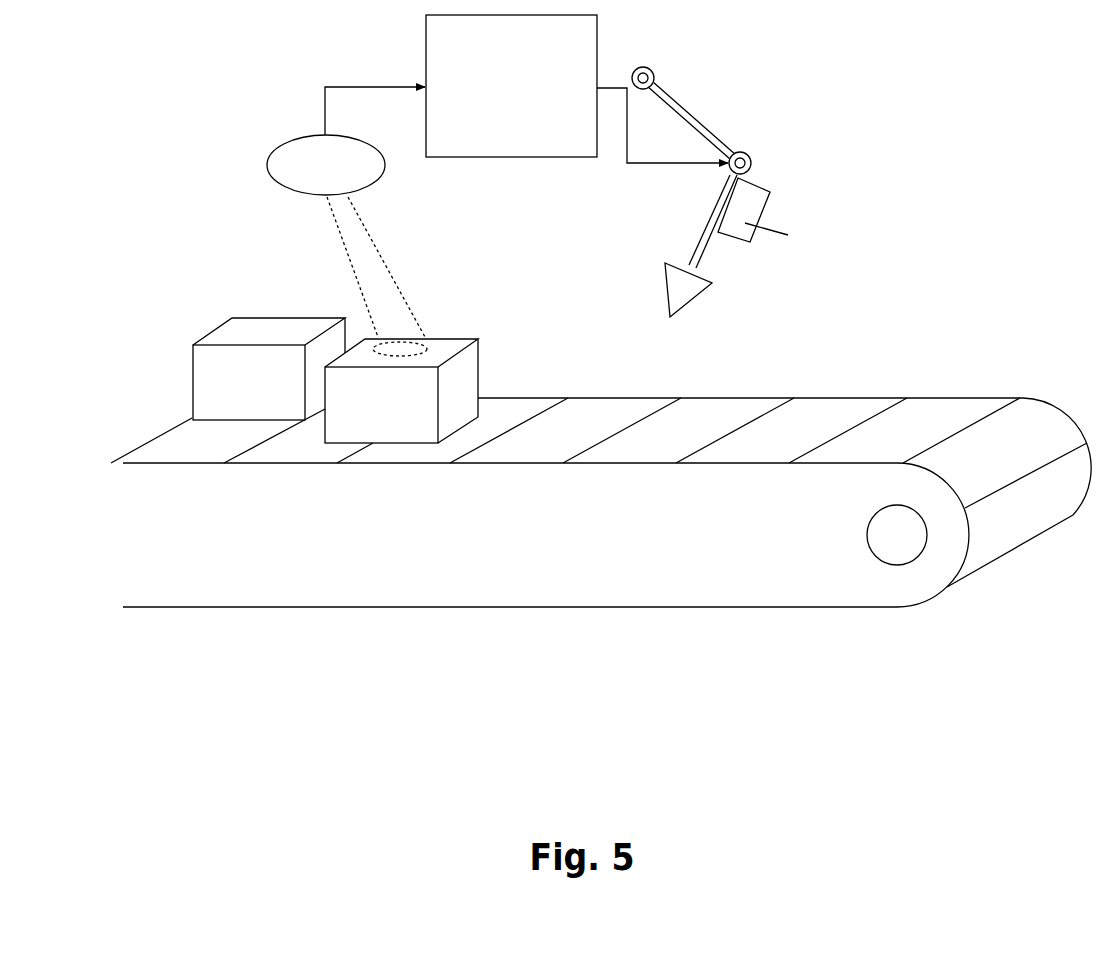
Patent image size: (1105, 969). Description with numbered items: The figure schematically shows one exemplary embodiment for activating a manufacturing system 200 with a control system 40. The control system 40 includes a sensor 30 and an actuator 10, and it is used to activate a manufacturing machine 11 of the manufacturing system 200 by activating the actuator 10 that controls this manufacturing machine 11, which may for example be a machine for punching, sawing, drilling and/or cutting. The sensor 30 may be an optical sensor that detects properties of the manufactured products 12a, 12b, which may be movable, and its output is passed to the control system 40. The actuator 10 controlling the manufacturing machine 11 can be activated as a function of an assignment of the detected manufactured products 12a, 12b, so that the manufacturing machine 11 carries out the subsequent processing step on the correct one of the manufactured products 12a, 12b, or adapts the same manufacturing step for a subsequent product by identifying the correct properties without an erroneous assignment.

The control system 40 is at (413, 25).
The sensor 30 is at (265, 170).
The manufacturing machine 11 is at (708, 130).
The actuator 10 is at (768, 210).
The manufactured product 12a is at (487, 370).
The manufactured product 12b is at (212, 333).
The manufacturing system 200 is at (498, 610).